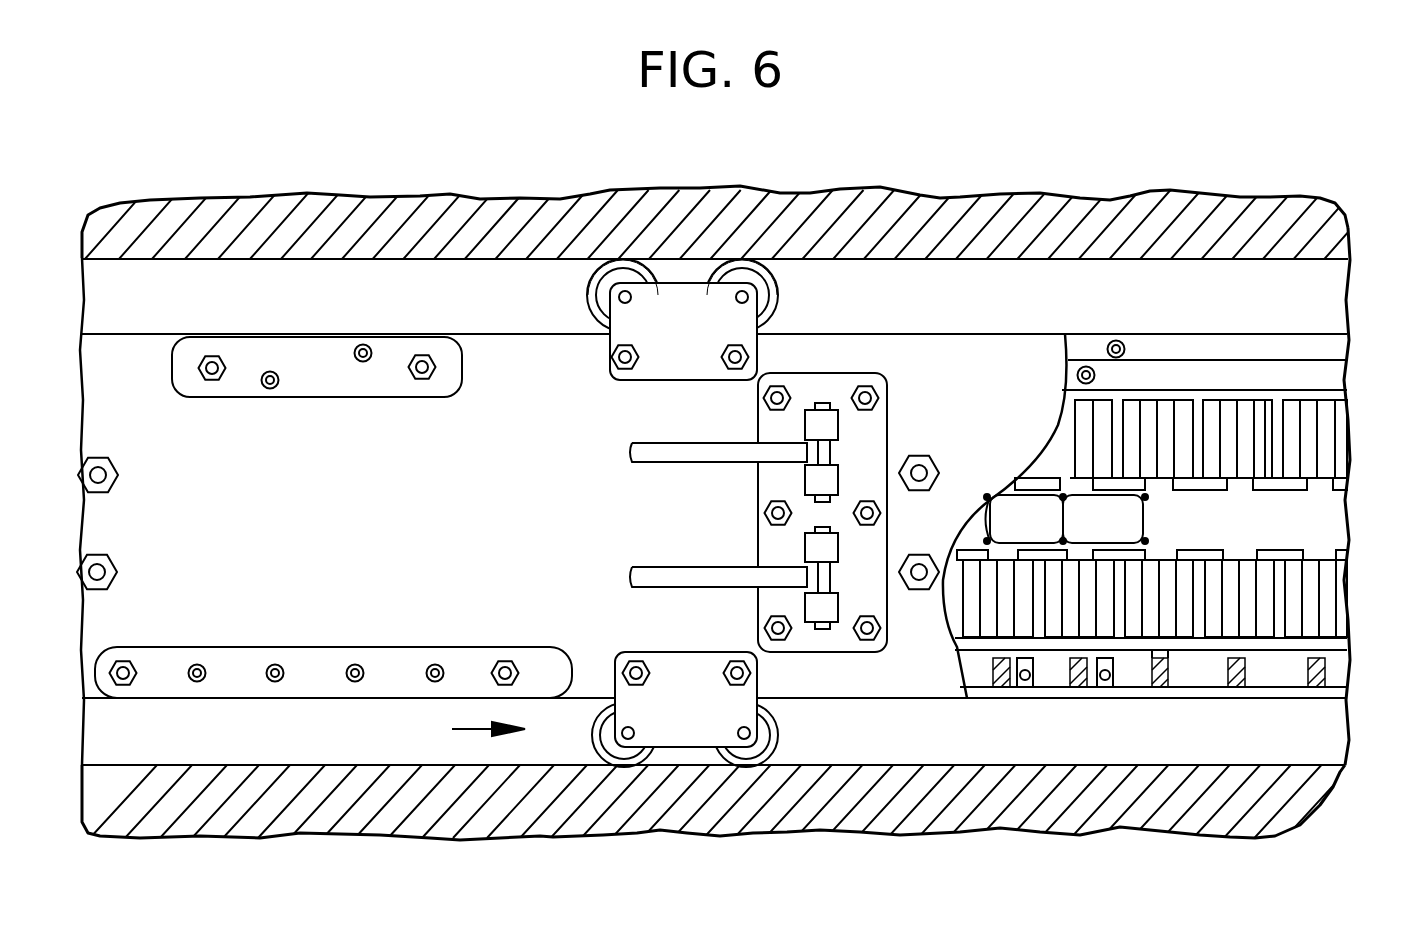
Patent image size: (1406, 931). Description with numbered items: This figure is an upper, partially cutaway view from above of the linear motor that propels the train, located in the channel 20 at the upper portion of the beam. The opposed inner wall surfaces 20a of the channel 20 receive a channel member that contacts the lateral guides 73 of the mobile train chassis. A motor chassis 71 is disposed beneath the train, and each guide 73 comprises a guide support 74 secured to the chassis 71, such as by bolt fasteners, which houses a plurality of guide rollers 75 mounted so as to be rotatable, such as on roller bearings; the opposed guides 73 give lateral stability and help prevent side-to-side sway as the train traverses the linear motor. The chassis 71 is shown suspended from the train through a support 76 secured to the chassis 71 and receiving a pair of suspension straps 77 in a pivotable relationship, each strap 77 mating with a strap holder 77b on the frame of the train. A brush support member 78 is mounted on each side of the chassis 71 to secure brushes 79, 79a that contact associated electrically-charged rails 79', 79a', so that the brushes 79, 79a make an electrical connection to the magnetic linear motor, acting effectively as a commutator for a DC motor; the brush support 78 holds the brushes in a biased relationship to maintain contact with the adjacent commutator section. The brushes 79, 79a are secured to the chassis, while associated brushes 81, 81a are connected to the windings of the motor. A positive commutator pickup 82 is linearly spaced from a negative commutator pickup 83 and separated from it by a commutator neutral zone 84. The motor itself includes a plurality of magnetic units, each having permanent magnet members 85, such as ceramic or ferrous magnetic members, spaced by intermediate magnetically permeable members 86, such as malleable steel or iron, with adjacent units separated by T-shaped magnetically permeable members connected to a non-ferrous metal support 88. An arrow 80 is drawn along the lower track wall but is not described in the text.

The channel 20 is at (184, 770).
The inner wall surfaces 20a is at (143, 258).
The motor chassis 71 is at (518, 356).
The lateral guide 73 is at (806, 288).
The guide support 74 is at (687, 300).
The guide roller 75 is at (753, 286).
The support 76 is at (840, 380).
The suspension strap 77 is at (668, 572).
The strap holder 77b is at (838, 478).
The brush support member 78 is at (290, 352).
The brush 79 is at (736, 511).
The brush 79a is at (1019, 493).
The electrically-charged rail 79' is at (1207, 316).
The electrically-charged rail 79a' is at (1204, 326).
The direction of travel arrow 80 is at (478, 729).
The brush 81 is at (1018, 690).
The brush 81a is at (1108, 690).
The positive commutator pickup 82 is at (1220, 482).
The negative commutator pickup 83 is at (1207, 690).
The commutator neutral zone 84 is at (1152, 692).
The permanent magnet member 85 is at (1228, 400).
The magnetically permeable member 86 is at (1268, 482).
The non-ferrous metal support 88 is at (1266, 400).